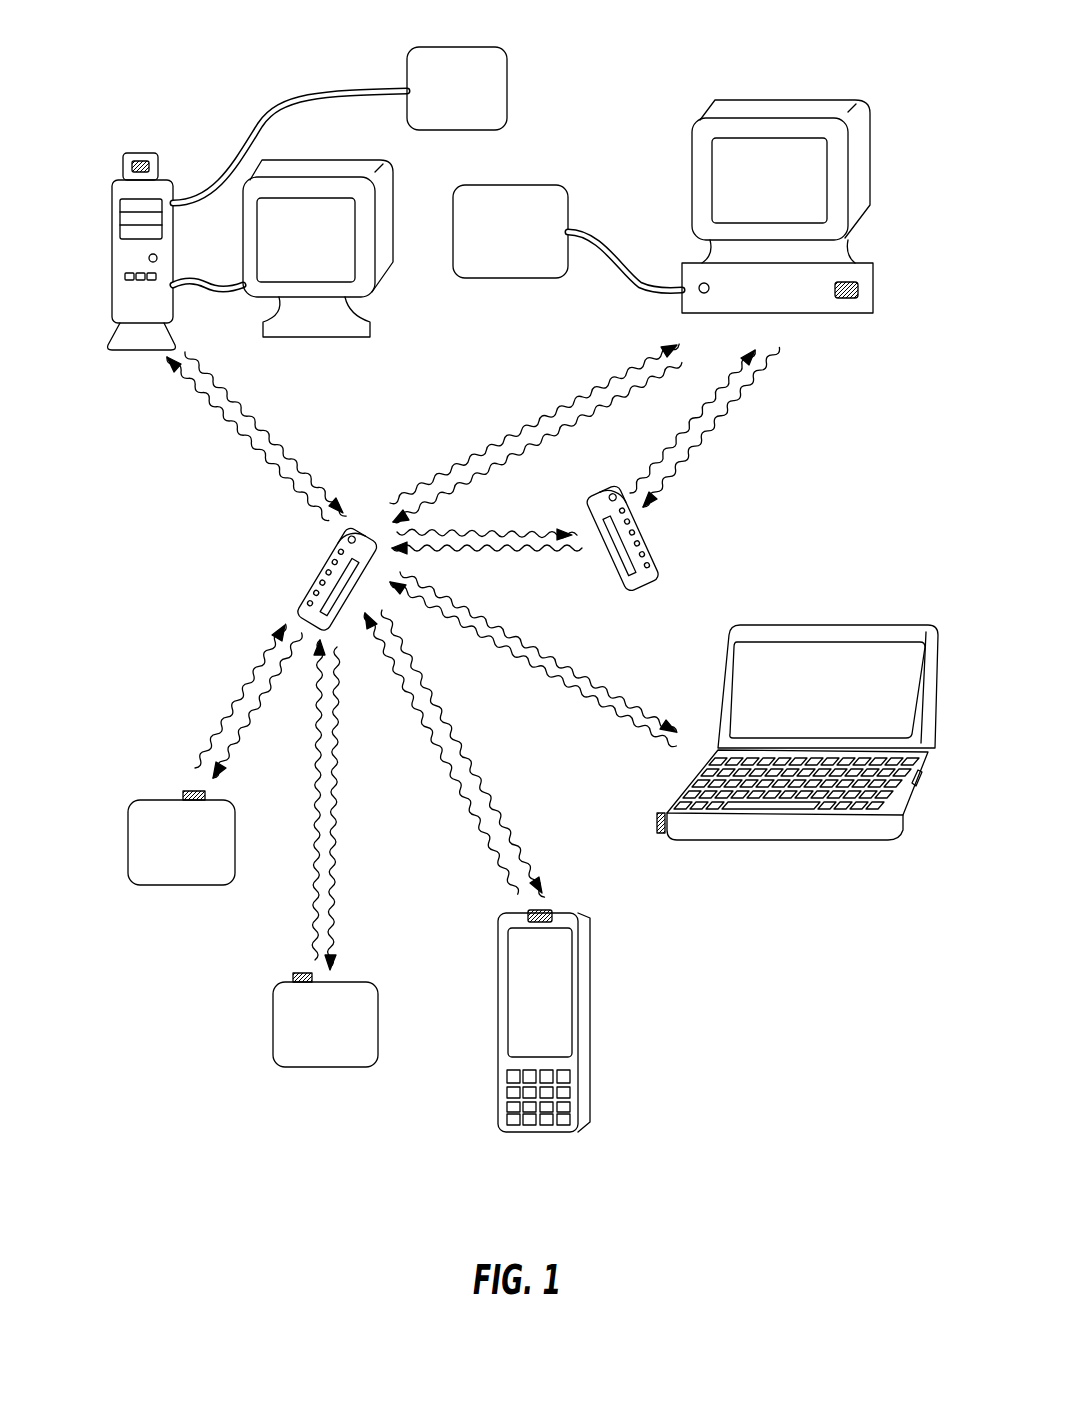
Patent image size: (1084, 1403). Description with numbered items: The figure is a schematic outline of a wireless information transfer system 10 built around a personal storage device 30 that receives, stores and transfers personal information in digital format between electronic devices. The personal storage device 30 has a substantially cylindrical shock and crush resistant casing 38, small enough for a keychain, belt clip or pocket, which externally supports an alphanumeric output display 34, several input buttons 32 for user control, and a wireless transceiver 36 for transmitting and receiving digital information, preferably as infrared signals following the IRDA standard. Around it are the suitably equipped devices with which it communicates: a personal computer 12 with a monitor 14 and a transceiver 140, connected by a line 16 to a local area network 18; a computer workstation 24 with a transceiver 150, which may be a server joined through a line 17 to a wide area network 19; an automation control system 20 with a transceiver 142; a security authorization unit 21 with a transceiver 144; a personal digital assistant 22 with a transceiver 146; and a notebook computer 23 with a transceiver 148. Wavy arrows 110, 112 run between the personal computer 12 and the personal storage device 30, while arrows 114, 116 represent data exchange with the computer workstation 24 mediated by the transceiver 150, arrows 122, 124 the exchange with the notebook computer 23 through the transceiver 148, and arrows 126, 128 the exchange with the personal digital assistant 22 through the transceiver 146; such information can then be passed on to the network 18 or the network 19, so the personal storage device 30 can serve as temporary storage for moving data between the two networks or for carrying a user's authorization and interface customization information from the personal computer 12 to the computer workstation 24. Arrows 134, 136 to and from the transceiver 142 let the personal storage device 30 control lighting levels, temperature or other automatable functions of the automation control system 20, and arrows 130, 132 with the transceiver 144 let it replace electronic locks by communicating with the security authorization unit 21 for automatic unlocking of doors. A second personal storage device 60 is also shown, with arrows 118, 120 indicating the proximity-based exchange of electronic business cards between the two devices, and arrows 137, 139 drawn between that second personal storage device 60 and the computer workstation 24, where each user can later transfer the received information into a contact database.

The wireless information transfer system 10 is at (792, 60).
The personal computer 12 is at (158, 125).
The monitor 14 is at (362, 292).
The line 16 is at (302, 92).
The line 17 is at (628, 285).
The local area network 18 is at (457, 88).
The wide area network 19 is at (510, 231).
The automation control system 20 is at (181, 842).
The security authorization unit 21 is at (309, 1006).
The personal digital assistant 22 is at (620, 1062).
The notebook computer 23 is at (830, 868).
The computer workstation 24 is at (812, 345).
The personal storage device 30 is at (245, 568).
The input buttons 32 is at (326, 577).
The alphanumeric output display 34 is at (339, 586).
The wireless transceiver 36 is at (352, 540).
The casing 38 is at (337, 579).
The personal storage device 60 is at (663, 540).
The wireless signal 110 is at (243, 440).
The wireless signal 112 is at (263, 427).
The arrow 114 is at (513, 432).
The arrow 116 is at (512, 463).
The arrow 118 is at (462, 530).
The arrow 120 is at (477, 552).
The arrow 122 is at (527, 640).
The arrow 124 is at (500, 650).
The arrow 126 is at (468, 760).
The arrow 128 is at (447, 762).
The arrow 130 is at (340, 783).
The arrow 132 is at (315, 810).
The arrow 134 is at (225, 725).
The arrow 136 is at (253, 732).
The wireless signal 137 is at (677, 437).
The wireless signal 139 is at (708, 438).
The transceiver 140 is at (135, 153).
The transceiver 142 is at (599, 490).
The transceiver 144 is at (293, 978).
The transceiver 146 is at (553, 912).
The transceiver 148 is at (658, 818).
The transceiver 150 is at (858, 290).